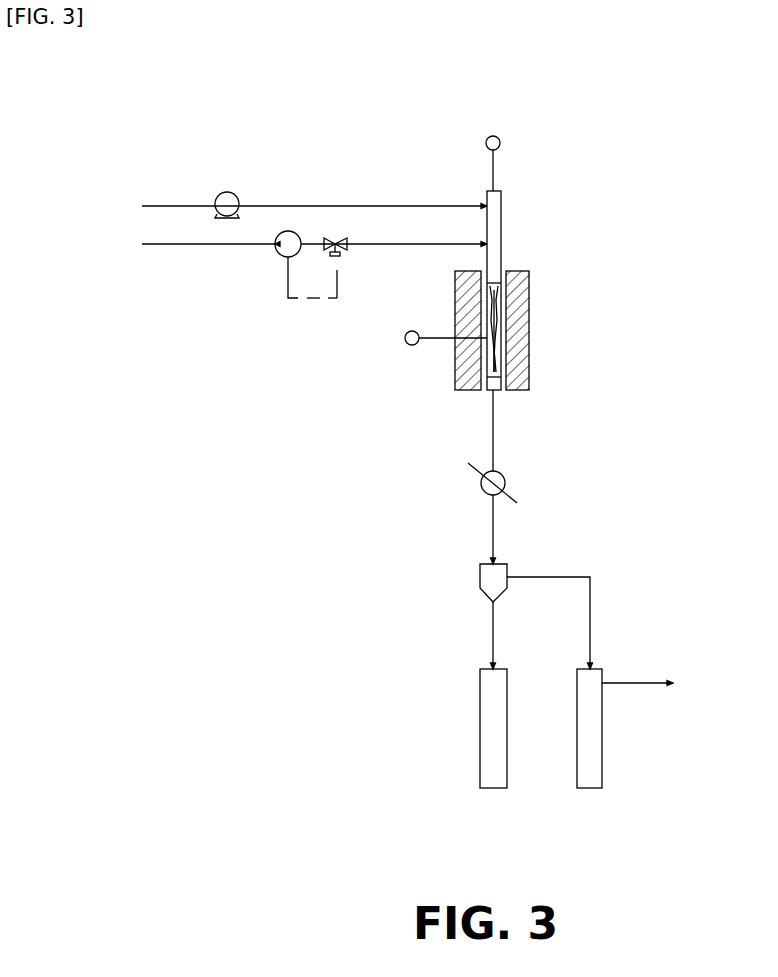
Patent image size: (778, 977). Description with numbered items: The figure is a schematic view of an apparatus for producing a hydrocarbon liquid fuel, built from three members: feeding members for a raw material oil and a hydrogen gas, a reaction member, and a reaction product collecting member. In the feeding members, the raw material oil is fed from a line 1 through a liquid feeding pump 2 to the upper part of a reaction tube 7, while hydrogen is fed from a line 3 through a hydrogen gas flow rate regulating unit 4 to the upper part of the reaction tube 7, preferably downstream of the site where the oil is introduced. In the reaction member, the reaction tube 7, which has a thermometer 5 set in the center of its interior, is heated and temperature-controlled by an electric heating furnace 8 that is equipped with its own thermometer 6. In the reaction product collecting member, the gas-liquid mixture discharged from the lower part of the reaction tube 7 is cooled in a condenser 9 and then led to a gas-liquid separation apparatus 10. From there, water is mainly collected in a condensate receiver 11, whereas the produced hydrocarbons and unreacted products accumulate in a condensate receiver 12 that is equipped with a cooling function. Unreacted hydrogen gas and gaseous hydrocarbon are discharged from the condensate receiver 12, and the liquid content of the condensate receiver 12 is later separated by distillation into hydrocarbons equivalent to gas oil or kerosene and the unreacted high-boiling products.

The line 1 is at (182, 198).
The liquid feeding pump 2 is at (236, 188).
The line 3 is at (163, 262).
The hydrogen gas flow rate regulating unit 4 is at (278, 265).
The thermometer 5 is at (513, 140).
The thermometer 6 is at (400, 353).
The reaction tube 7 is at (507, 247).
The electric heating furnace 8 is at (546, 333).
The condenser 9 is at (518, 480).
The gas-liquid separation apparatus 10 is at (475, 589).
The condensate receiver 11 is at (466, 757).
The condensate receiver 12 is at (617, 765).